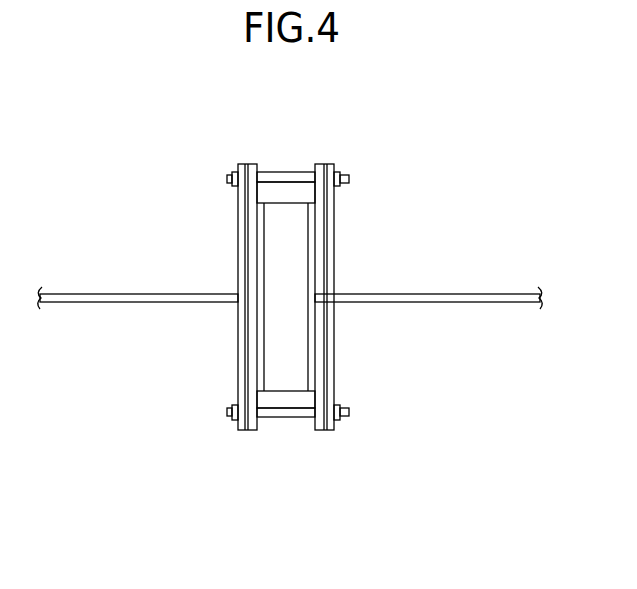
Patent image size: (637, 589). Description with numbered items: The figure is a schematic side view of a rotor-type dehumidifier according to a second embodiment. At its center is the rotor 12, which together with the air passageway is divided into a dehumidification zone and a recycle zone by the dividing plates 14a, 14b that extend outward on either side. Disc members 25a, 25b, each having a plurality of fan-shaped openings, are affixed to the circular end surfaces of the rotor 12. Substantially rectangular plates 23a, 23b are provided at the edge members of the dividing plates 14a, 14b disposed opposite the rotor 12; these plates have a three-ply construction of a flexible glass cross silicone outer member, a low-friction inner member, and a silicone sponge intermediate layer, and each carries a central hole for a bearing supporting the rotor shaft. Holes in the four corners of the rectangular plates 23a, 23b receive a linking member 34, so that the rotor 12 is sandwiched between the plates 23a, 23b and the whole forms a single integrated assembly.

The rotor 12 is at (288, 378).
The dividing plate 14a is at (50, 294).
The dividing plate 14b is at (507, 294).
The substantially rectangular plate 23a is at (238, 223).
The substantially rectangular plate 23b is at (334, 230).
The disc member 25a is at (264, 366).
The disc member 25b is at (315, 365).
The linking member 34 is at (293, 172).